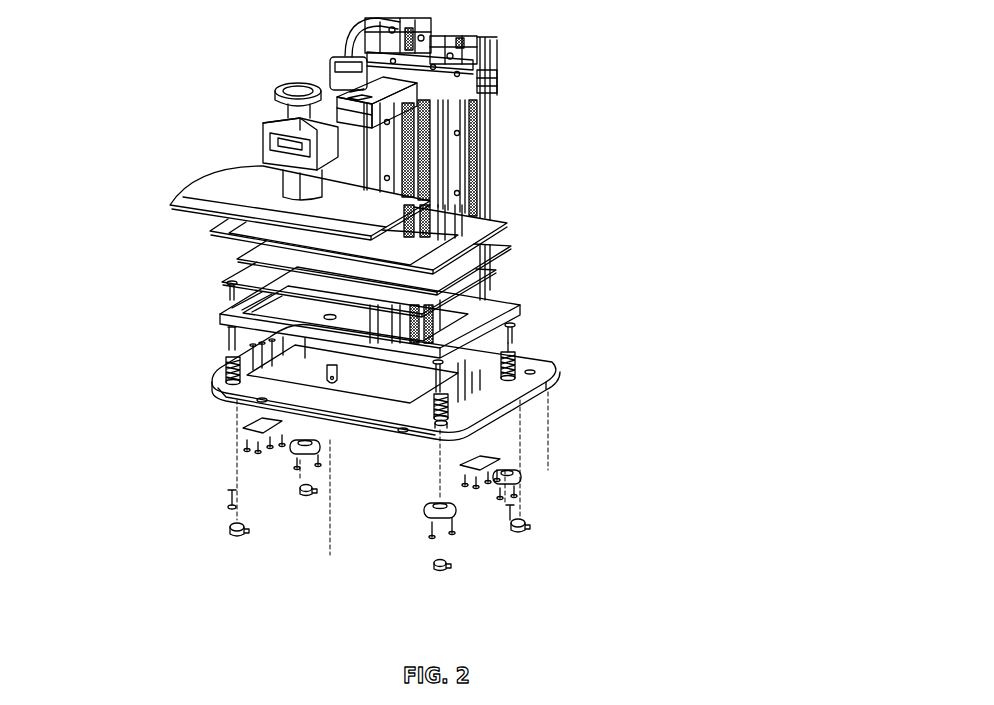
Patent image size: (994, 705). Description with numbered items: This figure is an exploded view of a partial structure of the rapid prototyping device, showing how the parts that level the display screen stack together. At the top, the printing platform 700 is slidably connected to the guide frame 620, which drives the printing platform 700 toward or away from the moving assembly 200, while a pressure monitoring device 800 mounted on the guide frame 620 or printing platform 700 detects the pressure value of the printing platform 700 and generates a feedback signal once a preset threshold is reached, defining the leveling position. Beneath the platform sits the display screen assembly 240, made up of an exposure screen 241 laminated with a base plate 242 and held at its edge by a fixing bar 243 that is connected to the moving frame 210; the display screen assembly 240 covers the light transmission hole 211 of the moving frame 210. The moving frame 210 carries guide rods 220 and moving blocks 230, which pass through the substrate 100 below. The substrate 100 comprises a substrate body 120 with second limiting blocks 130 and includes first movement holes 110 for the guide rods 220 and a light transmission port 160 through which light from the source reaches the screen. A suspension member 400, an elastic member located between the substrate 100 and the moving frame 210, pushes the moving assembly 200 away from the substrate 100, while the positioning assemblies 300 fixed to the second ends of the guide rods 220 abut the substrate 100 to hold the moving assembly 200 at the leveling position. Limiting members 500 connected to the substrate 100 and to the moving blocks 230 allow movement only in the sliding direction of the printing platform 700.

The substrate 100 is at (438, 482).
The first movement hole 110 is at (443, 418).
The substrate body 120 is at (370, 415).
The second limiting block 130 is at (435, 518).
The light transmission port 160 is at (323, 377).
The moving assembly 200 is at (720, 229).
The moving frame 210 is at (391, 334).
The light transmission hole 211 is at (323, 313).
The guide rod 220 is at (508, 343).
The moving block 230 is at (510, 369).
The display screen assembly 240 is at (648, 191).
The exposure screen 241 is at (482, 256).
The base plate 242 is at (481, 279).
The fixing bar 243 is at (497, 225).
The positioning assembly 300 is at (520, 528).
The suspension member 400 is at (232, 380).
The limiting member 500 is at (487, 463).
The guide frame 620 is at (478, 114).
The printing platform 700 is at (208, 192).
The pressure monitoring device 800 is at (388, 108).